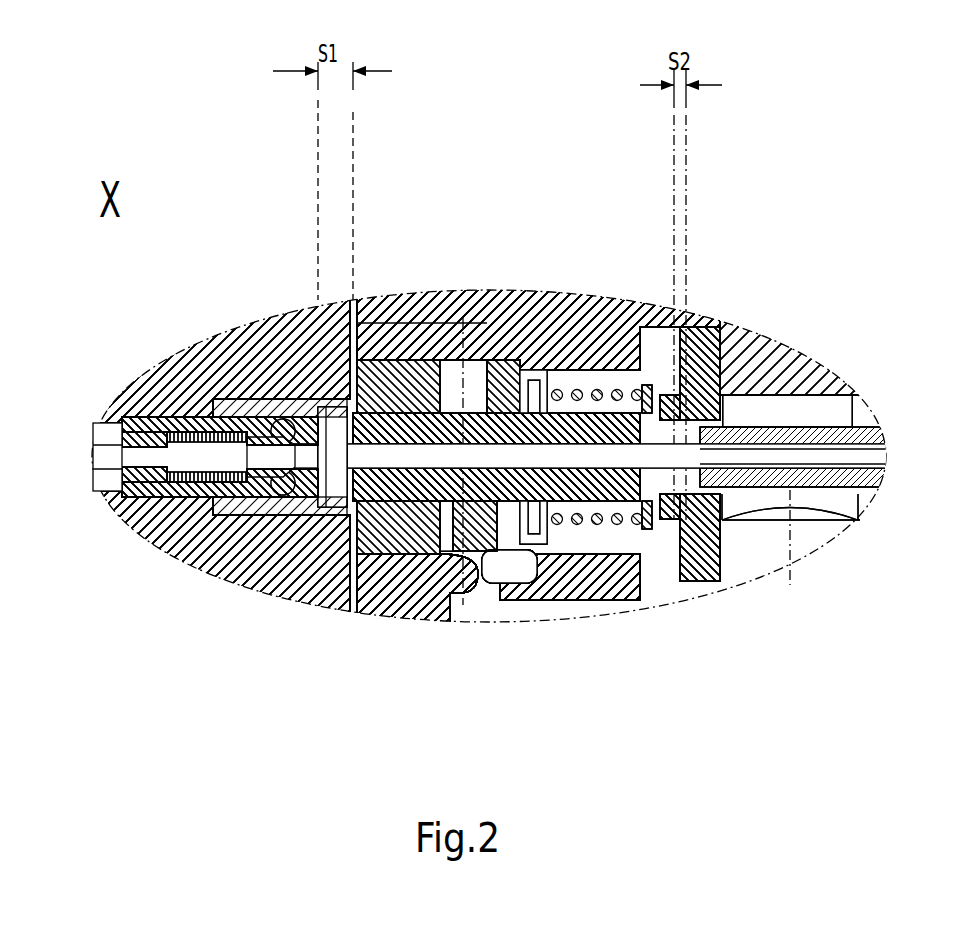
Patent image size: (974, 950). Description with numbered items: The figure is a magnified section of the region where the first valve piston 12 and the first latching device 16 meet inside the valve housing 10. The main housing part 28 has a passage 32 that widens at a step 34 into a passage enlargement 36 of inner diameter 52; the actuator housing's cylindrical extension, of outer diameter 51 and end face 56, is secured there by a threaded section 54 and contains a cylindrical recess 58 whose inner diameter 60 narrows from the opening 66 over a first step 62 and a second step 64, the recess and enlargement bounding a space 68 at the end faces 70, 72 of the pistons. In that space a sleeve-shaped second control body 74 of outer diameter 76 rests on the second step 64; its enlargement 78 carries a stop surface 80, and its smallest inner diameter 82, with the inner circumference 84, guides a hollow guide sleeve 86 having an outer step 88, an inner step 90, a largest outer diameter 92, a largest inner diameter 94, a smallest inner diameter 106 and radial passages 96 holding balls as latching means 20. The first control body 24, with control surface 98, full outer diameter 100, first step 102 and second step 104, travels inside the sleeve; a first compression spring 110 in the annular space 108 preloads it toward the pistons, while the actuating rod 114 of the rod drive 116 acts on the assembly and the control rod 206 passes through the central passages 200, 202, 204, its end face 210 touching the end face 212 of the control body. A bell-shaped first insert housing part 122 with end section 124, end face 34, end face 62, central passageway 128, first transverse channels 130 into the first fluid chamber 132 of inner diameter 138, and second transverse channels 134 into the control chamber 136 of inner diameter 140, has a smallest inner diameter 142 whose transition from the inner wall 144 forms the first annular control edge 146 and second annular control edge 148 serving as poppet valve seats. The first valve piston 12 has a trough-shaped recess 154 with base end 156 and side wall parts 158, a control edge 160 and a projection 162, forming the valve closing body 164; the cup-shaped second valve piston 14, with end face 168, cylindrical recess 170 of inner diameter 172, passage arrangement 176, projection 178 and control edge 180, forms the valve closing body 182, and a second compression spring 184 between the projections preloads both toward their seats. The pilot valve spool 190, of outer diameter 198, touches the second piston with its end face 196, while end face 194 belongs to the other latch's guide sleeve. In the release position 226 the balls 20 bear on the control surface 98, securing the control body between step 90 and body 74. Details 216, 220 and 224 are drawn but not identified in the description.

The valve housing 10 is at (333, 330).
The first valve piston 12 is at (345, 400).
The second valve piston 14 is at (566, 375).
The first latching device 16 is at (177, 660).
The latching means 20 is at (290, 512).
The first control body 24 is at (178, 522).
The main housing part 28 is at (333, 330).
The passage 32 is at (822, 432).
The step 34 is at (745, 345).
The passage enlargement 36 is at (617, 335).
The outer diameter 51 is at (373, 380).
The inner diameter 52 is at (558, 390).
The threaded section 54 is at (373, 380).
The end face 56 is at (470, 425).
The cylindrical recess 58 is at (420, 520).
The inner diameter 60 is at (420, 520).
The first step 62 is at (340, 508).
The second step 64 is at (188, 512).
The opening 66 is at (470, 425).
The space 68 is at (526, 385).
The end face 70 is at (325, 508).
The end face 72 is at (748, 545).
The second control body 74 is at (240, 402).
The outer diameter 76 is at (262, 418).
The enlargement 78 is at (338, 410).
The stop surface 80 is at (330, 398).
The smallest inner diameter 82 is at (215, 420).
The inner circumference 84 is at (172, 436).
The guide sleeve 86 is at (158, 480).
The step 88 is at (168, 565).
The step 90 is at (142, 430).
The largest outer diameter 92 is at (215, 420).
The largest inner diameter 94 is at (232, 505).
The passages 96 is at (310, 432).
The control surface 98 is at (300, 412).
The full outer diameter 100 is at (232, 505).
The first step 102 is at (210, 505).
The second step 104 is at (142, 430).
The smallest inner diameter 106 is at (112, 422).
The annular space 108 is at (175, 425).
The first compression spring 110 is at (175, 425).
The actuating rod 114 is at (108, 428).
The rod drive 116 is at (105, 447).
The first insert housing part 122 is at (572, 390).
The end section 124 is at (700, 335).
The central passageway 128 is at (386, 360).
The first transverse channels 130 is at (444, 355).
The first fluid chamber 132 is at (484, 400).
The second transverse channels 134 is at (630, 400).
The control chamber 136 is at (518, 385).
The inner diameter 138 is at (425, 410).
The inner diameter 140 is at (686, 335).
The smallest inner diameter 142 is at (386, 360).
The inner wall 144 is at (528, 560).
The first annular control edge 146 is at (522, 545).
The second annular control edge 148 is at (738, 360).
The trough-shaped recess 154 is at (480, 555).
The base end 156 is at (480, 555).
The side wall parts 158 is at (472, 580).
The control edge 160 is at (522, 545).
The projection 162 is at (553, 560).
The valve closing body 164 is at (345, 400).
The end face 168 is at (560, 525).
The cylindrical recess 170 is at (652, 405).
The inner diameter 172 is at (612, 535).
The passage arrangement 176 is at (770, 340).
The projection 178 is at (668, 540).
The control edge 180 is at (712, 340).
The valve closing body 182 is at (566, 375).
The second compression spring 184 is at (633, 528).
The pilot valve spool 190 is at (868, 487).
The end face 194 is at (305, 478).
The end face 196 is at (730, 498).
The outer diameter 198 is at (845, 400).
The central passage 200 is at (868, 430).
The central passage 202 is at (392, 560).
The central passage 204 is at (650, 530).
The control rod 206 is at (868, 460).
The end face 210 is at (290, 515).
The end face 212 is at (290, 515).
The bore 216 is at (505, 325).
The bracket 220 is at (690, 585).
The body 224 is at (108, 482).
The release position 226 is at (300, 520).